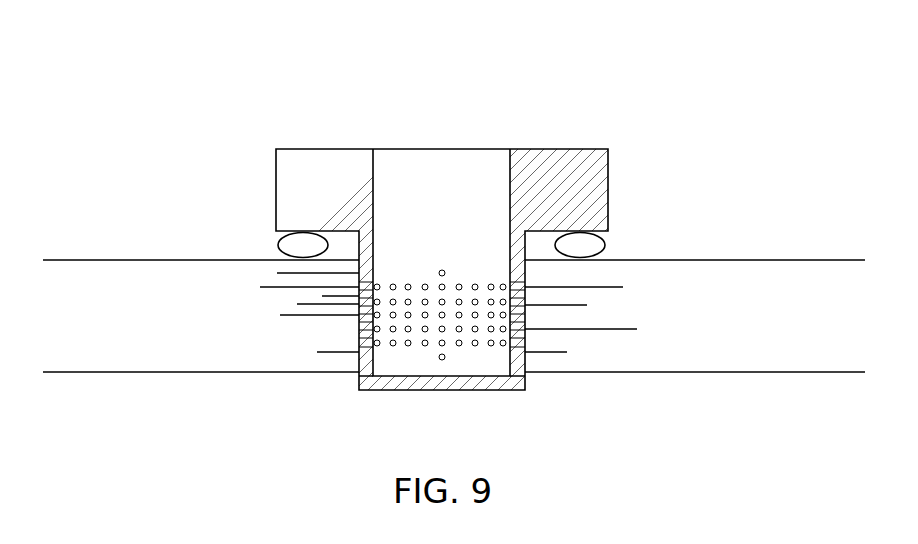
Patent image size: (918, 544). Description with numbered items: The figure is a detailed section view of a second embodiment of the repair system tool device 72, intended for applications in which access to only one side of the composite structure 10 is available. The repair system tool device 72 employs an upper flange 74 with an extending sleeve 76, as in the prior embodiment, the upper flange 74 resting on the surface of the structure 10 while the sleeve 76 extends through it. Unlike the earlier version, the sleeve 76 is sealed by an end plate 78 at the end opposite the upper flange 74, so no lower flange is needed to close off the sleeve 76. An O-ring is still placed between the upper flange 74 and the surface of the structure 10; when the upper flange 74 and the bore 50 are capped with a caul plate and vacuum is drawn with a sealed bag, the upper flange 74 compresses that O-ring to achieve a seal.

The structure 10 is at (694, 259).
The bore 50 is at (483, 175).
The repair system tool device 72 is at (648, 152).
The upper flange 74 is at (561, 168).
The sleeve 76 is at (362, 248).
The end plate 78 is at (490, 388).